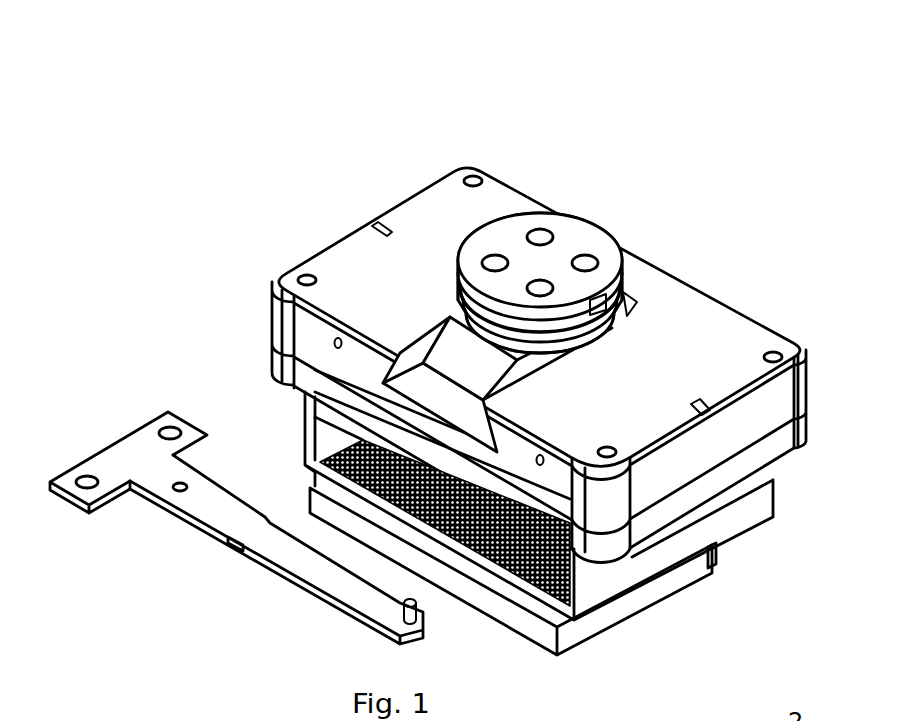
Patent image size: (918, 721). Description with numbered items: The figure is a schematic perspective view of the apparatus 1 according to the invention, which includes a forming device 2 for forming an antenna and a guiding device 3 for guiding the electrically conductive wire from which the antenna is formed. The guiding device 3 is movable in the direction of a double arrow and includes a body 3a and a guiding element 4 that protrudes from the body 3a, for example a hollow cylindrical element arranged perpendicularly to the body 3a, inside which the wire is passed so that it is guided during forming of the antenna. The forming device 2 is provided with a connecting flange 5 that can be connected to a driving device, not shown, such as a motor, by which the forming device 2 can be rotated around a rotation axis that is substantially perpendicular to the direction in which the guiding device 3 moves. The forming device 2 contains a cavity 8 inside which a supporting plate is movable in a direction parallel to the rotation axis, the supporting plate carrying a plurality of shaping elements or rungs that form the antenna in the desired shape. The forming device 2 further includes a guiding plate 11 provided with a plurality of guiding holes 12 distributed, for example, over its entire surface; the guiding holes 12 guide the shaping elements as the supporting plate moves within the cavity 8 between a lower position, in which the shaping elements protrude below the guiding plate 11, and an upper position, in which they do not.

The apparatus 1 is at (417, 368).
The forming device 2 is at (673, 327).
The guiding device 3 is at (306, 565).
The body 3a is at (235, 513).
The guiding element 4 is at (420, 633).
The connecting flange 5 is at (528, 263).
The cavity 8 is at (335, 433).
The guiding plate 11 is at (512, 578).
The guiding holes 12 is at (313, 472).